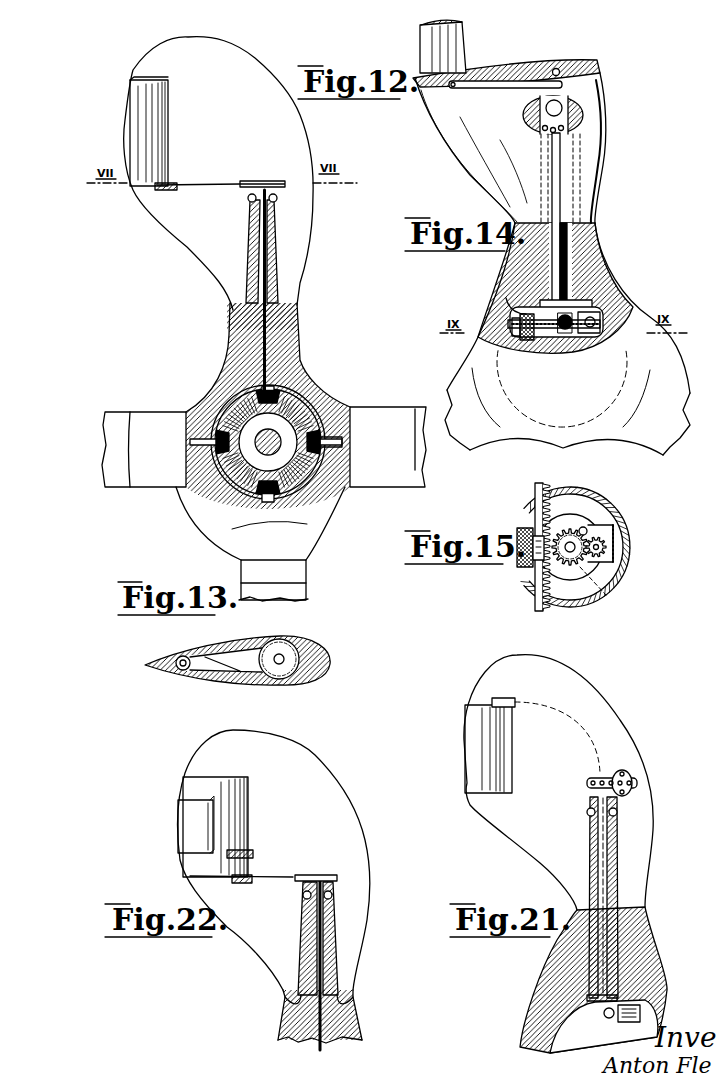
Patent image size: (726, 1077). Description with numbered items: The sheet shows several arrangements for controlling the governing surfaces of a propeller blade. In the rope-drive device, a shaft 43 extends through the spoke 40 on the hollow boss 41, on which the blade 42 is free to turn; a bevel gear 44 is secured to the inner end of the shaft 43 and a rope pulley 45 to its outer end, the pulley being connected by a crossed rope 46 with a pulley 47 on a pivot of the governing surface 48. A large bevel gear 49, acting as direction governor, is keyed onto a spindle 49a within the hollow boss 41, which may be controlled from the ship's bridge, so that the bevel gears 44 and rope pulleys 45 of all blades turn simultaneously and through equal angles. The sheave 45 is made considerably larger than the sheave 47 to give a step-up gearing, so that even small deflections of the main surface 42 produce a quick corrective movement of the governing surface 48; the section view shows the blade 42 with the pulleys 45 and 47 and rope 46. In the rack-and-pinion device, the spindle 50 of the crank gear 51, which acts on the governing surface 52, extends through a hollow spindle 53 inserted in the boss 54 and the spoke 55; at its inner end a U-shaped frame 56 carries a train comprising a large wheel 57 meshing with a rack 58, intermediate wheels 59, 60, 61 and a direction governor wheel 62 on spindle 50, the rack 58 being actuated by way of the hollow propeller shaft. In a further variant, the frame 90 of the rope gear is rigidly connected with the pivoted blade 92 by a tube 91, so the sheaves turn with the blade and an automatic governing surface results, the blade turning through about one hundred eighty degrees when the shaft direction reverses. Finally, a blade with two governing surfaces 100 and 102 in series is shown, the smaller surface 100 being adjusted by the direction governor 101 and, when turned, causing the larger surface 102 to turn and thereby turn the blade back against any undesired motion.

In FIG. 12, the spoke 40 is at (285, 277).
In FIG. 12, the hollow boss 41 is at (281, 434).
In FIG. 12, the blade 42 is at (305, 140).
In FIG. 13, the blade 42 is at (312, 648).
In FIG. 12, the shaft 43 is at (258, 309).
In FIG. 12, the bevel gear 44 is at (305, 392).
In FIG. 12, the rope pulley 45 is at (258, 181).
In FIG. 13, the rope pulley 45 is at (281, 641).
In FIG. 12, the crossed rope 46 is at (207, 183).
In FIG. 13, the crossed rope 46 is at (216, 680).
In FIG. 12, the pulley 47 is at (172, 190).
In FIG. 13, the pulley 47 is at (182, 656).
In FIG. 12, the governing surface 48 is at (129, 123).
In FIG. 12, the large bevel gear 49 is at (231, 411).
In FIG. 12, the spindle 49a is at (343, 428).
In FIG. 14, the spindle 50 is at (561, 203).
In FIG. 14, the crank gear 51 is at (516, 71).
In FIG. 14, the governing surface 52 is at (455, 47).
In FIG. 14, the hollow spindle 53 is at (566, 166).
In FIG. 14, the boss 54 is at (497, 311).
In FIG. 14, the spoke 55 is at (574, 146).
In FIG. 14, the U-shaped frame 56 is at (604, 327).
In FIG. 15, the U-shaped frame 56 is at (614, 528).
In FIG. 14, the large wheel 57 is at (549, 340).
In FIG. 15, the large wheel 57 is at (567, 568).
In FIG. 14, the rack 58 is at (531, 343).
In FIG. 15, the rack 58 is at (540, 581).
In FIG. 14, the intermediate wheel 59 is at (593, 332).
In FIG. 15, the intermediate wheel 59 is at (608, 552).
In FIG. 14, the intermediate wheel 60 is at (604, 318).
In FIG. 15, the intermediate wheel 60 is at (599, 526).
In FIG. 14, the intermediate wheel 61 is at (567, 336).
In FIG. 15, the intermediate wheel 61 is at (584, 528).
In FIG. 14, the direction governor wheel 62 is at (512, 303).
In FIG. 15, the direction governor wheel 62 is at (600, 587).
In FIG. 21, the frame of the rope gear 90 is at (613, 1008).
In FIG. 21, the tube 91 is at (640, 965).
In FIG. 21, the pivoted blade 92 is at (619, 738).
In FIG. 22, the governing surface 100 is at (184, 829).
In FIG. 22, the direction governor 101 is at (318, 877).
In FIG. 22, the governing surface 102 is at (236, 827).